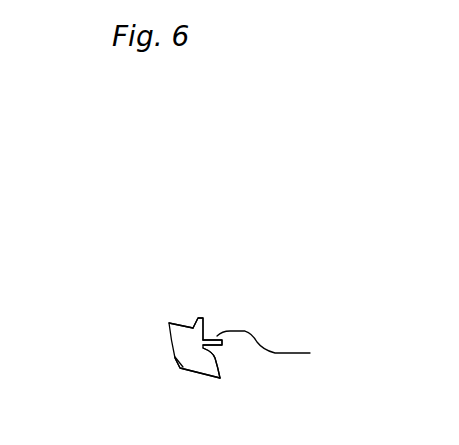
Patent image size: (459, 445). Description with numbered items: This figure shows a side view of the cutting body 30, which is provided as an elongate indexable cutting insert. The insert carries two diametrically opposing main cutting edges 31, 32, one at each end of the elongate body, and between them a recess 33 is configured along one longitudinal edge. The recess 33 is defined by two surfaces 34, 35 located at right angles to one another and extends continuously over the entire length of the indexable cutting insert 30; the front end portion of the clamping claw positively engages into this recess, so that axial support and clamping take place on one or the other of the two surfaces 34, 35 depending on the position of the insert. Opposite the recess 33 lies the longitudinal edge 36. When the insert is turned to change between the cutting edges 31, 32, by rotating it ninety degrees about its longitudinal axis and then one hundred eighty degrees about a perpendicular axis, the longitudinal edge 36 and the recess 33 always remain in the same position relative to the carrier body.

The cutting body 30 is at (178, 342).
The cutting edge 31 is at (167, 323).
The cutting edge 32 is at (220, 378).
The recess 33 is at (212, 333).
The surface 34 is at (212, 333).
The surface 35 is at (286, 350).
The longitudinal edge 36 is at (176, 370).